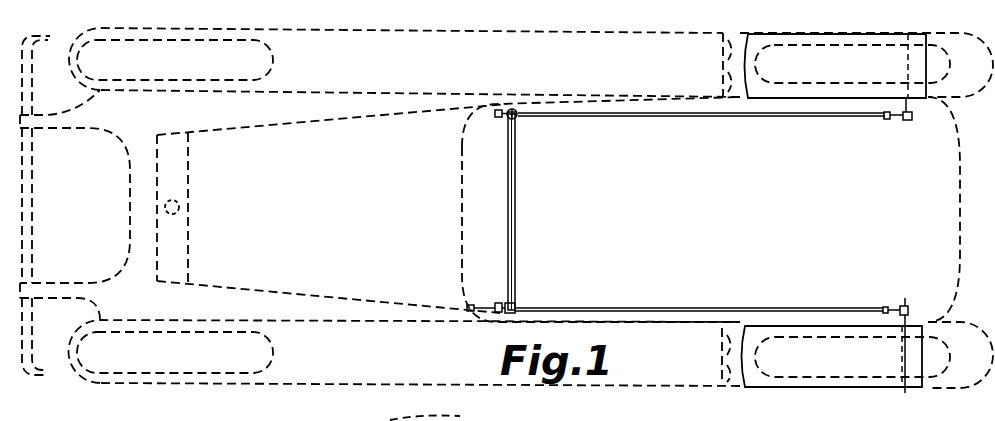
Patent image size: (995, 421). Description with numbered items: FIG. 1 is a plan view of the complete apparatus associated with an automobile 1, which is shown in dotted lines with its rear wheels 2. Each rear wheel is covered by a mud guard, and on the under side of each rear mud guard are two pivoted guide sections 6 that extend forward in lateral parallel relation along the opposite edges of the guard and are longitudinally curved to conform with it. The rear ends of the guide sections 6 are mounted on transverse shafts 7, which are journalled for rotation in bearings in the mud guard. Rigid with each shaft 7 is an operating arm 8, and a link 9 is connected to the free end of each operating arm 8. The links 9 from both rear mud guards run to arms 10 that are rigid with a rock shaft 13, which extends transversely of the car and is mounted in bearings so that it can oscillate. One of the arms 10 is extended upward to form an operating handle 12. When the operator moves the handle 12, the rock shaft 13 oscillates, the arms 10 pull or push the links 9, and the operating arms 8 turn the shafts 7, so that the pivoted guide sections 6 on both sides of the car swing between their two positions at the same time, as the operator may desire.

The automobile 1 is at (332, 208).
The rear wheels 2 is at (958, 355).
The pivoted guide sections 6 is at (812, 402).
The transverse shafts 7 is at (925, 353).
The operating arm 8 is at (908, 290).
The link 9 is at (697, 292).
The arms 10 is at (508, 315).
The operating handle 12 is at (470, 305).
The rock shaft 13 is at (517, 227).